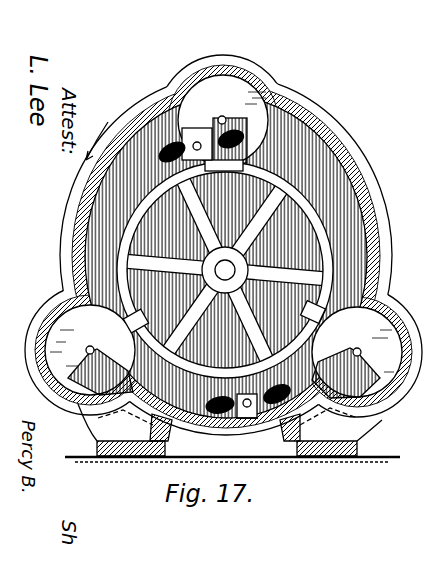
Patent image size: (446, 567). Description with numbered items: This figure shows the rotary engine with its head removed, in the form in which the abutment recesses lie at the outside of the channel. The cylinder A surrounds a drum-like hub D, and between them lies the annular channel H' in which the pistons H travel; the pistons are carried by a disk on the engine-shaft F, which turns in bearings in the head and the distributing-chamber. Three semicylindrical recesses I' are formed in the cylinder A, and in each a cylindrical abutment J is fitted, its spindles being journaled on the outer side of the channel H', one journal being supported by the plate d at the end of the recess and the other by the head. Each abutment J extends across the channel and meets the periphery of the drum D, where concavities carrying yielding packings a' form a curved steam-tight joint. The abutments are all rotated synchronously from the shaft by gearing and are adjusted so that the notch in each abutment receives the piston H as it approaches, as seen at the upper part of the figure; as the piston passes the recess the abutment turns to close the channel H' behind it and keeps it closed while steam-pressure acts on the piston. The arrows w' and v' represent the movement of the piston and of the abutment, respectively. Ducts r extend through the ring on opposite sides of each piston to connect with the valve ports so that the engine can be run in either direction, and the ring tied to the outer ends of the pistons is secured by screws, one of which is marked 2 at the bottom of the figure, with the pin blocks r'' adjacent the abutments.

The cylinder A is at (308, 128).
The piston H is at (226, 256).
The annular channel H' is at (228, 256).
The arrow representing movement of the abutment v' is at (223, 225).
The recess I' is at (223, 244).
The hub D is at (318, 213).
The engine-shaft F is at (237, 270).
The packing a' is at (224, 299).
The abutment J is at (195, 113).
The pin block r'' is at (211, 275).
The duct r is at (224, 271).
The plate d is at (82, 381).
The shoe foot 2 is at (251, 412).
The arrow representing movement of the piston w' is at (96, 139).